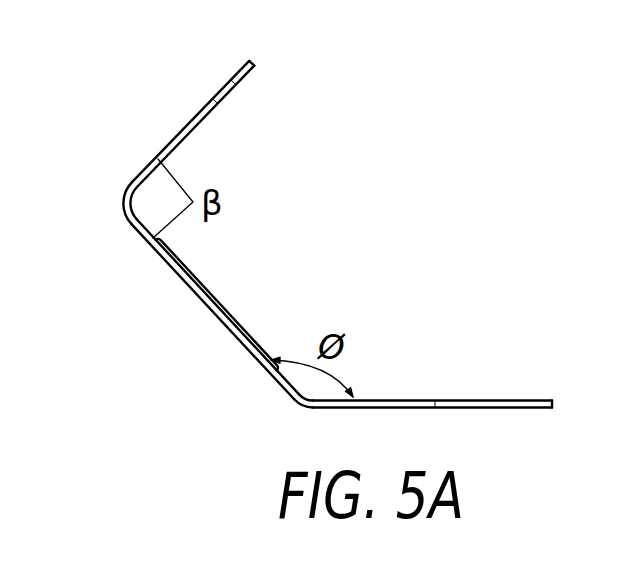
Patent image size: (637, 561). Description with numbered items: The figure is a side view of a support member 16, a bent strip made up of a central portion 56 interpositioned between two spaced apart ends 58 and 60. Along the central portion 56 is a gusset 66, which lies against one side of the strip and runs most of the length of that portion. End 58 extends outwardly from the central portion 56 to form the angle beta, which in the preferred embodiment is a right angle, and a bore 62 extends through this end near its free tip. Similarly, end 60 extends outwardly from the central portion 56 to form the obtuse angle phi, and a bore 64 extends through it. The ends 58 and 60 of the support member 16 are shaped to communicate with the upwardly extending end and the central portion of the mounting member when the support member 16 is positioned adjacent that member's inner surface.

The support member 16 is at (157, 272).
The central portion 56 is at (226, 331).
The end 58 is at (181, 124).
The end 60 is at (480, 410).
The bore 62 is at (221, 90).
The bore 64 is at (422, 400).
The gusset 66 is at (206, 287).